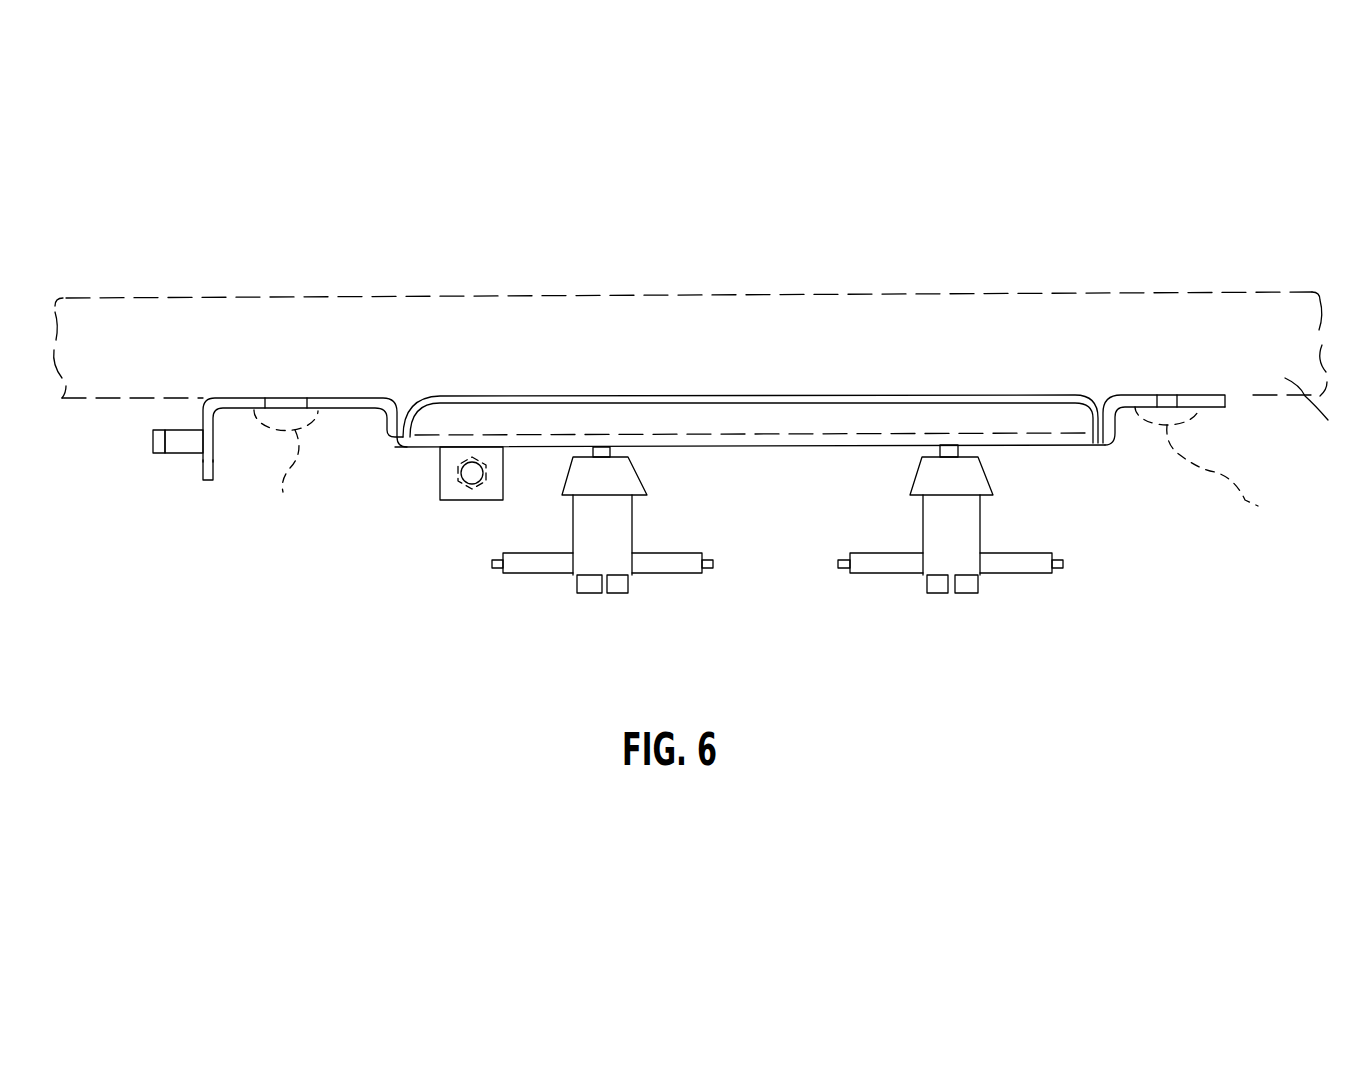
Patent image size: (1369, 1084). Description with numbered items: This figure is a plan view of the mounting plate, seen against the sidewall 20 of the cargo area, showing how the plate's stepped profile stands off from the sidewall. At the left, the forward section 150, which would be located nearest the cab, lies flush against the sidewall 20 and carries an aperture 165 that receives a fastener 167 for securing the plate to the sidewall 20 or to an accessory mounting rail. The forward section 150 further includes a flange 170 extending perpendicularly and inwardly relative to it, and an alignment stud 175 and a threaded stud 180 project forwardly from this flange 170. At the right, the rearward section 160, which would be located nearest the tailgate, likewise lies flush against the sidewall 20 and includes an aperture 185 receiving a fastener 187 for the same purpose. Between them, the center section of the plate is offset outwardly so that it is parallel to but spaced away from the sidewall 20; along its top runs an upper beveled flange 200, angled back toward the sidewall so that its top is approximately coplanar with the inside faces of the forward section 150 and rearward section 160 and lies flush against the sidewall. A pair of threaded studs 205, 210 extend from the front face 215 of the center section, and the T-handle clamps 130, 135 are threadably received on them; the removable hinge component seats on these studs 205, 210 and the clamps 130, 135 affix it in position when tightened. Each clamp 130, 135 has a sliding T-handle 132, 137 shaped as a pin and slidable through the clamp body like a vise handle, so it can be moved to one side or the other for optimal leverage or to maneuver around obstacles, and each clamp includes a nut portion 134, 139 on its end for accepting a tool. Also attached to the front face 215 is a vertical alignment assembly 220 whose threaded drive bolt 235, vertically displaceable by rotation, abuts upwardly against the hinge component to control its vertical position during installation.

The sidewall 20 is at (1326, 420).
The T-handle clamp 130 is at (595, 550).
The sliding T-handle 132 is at (691, 563).
The nut portion 134 is at (590, 587).
The T-handle clamp 135 is at (950, 543).
The sliding T-handle 137 is at (1035, 563).
The nut portion 139 is at (970, 583).
The forward section 150 is at (228, 398).
The rearward section 160 is at (1215, 395).
The aperture 165 is at (285, 410).
The fastener 167 is at (285, 474).
The flange 170 is at (213, 478).
The alignment stud 175 is at (183, 450).
The threaded stud 180 is at (157, 452).
The aperture 185 is at (1167, 395).
The fastener 187 is at (1234, 473).
The upper beveled flange 200 is at (1020, 412).
The threaded stud 205 is at (613, 449).
The threaded stud 210 is at (957, 449).
The front face 215 is at (858, 445).
The vertical alignment assembly 220 is at (440, 475).
The threaded drive bolt 235 is at (468, 478).